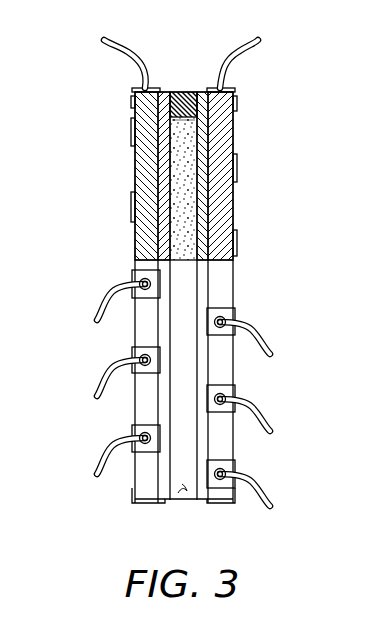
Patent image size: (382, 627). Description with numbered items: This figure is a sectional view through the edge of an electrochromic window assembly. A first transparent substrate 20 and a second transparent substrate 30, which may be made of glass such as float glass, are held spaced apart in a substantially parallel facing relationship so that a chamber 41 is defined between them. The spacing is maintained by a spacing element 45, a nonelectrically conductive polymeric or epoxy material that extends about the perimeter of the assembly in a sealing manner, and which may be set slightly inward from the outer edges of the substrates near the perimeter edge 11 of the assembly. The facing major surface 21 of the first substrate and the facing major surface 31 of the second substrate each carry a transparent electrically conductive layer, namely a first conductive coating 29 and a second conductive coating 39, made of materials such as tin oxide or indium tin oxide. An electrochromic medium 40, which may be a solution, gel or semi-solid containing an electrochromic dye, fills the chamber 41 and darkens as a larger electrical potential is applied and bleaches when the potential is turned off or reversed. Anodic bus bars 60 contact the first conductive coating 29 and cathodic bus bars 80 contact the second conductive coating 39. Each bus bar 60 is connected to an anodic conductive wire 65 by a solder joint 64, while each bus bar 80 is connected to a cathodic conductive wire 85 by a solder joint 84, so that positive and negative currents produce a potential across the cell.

The perimeter edge 11 is at (170, 504).
The first transparent substrate 20 is at (135, 232).
The facing major surface of the first substrate 21 is at (178, 152).
The first conductive coating 29 is at (163, 180).
The second transparent substrate 30 is at (233, 219).
The facing major surface of the second substrate 31 is at (186, 143).
The second conductive coating 39 is at (222, 202).
The electrochromic medium 40 is at (226, 243).
The chamber 41 is at (195, 92).
The spacing element 45 is at (183, 92).
The bus bars 60 is at (131, 100).
The solder joint 64 is at (142, 88).
The anodic conductive wire 65 is at (110, 52).
The bus bars 80 is at (237, 100).
The solder joint 84 is at (225, 88).
The cathodic conductive wire 85 is at (255, 48).